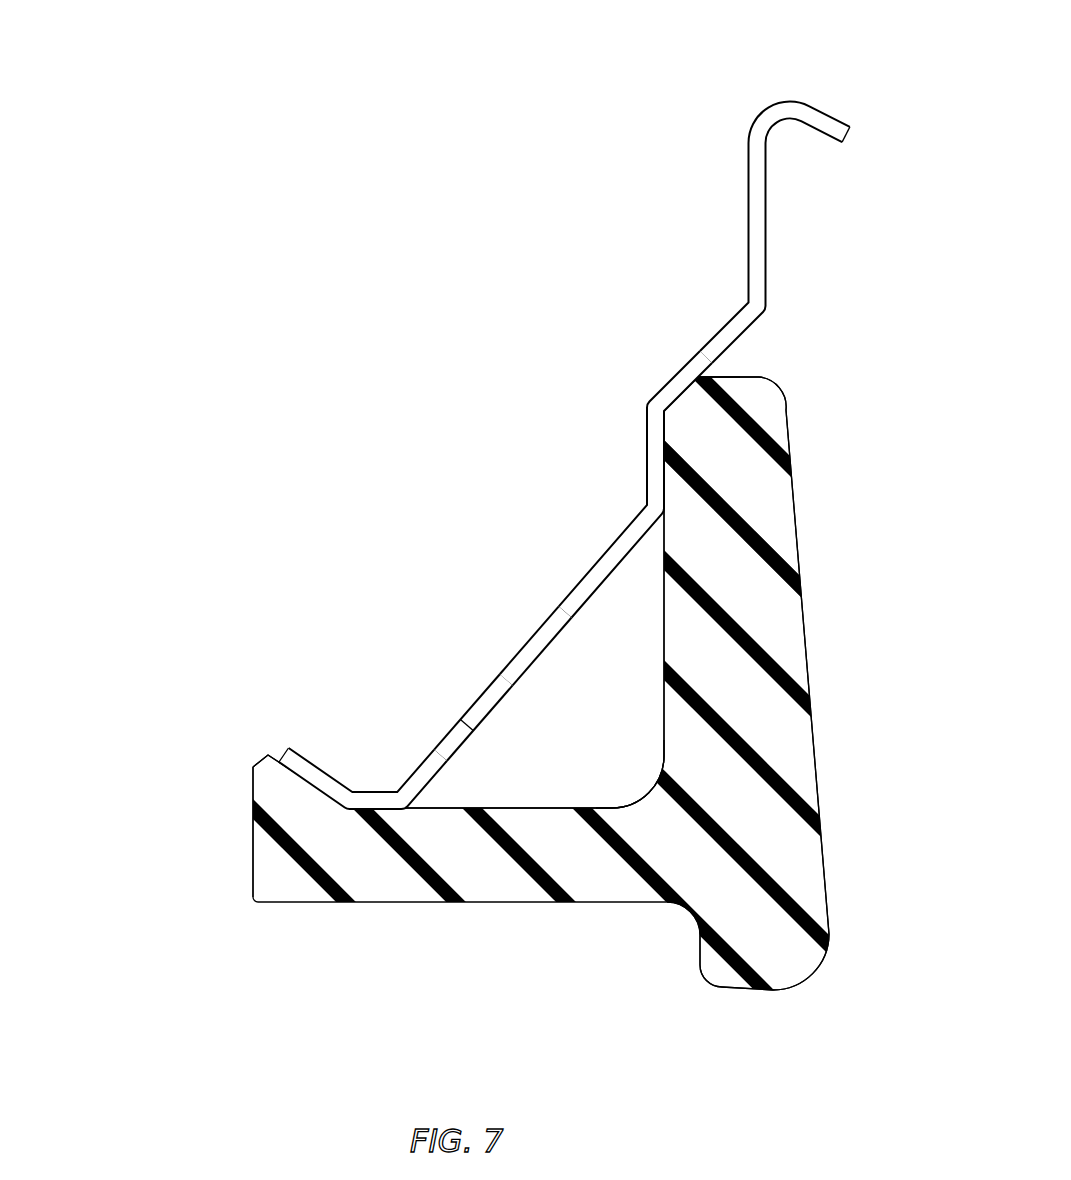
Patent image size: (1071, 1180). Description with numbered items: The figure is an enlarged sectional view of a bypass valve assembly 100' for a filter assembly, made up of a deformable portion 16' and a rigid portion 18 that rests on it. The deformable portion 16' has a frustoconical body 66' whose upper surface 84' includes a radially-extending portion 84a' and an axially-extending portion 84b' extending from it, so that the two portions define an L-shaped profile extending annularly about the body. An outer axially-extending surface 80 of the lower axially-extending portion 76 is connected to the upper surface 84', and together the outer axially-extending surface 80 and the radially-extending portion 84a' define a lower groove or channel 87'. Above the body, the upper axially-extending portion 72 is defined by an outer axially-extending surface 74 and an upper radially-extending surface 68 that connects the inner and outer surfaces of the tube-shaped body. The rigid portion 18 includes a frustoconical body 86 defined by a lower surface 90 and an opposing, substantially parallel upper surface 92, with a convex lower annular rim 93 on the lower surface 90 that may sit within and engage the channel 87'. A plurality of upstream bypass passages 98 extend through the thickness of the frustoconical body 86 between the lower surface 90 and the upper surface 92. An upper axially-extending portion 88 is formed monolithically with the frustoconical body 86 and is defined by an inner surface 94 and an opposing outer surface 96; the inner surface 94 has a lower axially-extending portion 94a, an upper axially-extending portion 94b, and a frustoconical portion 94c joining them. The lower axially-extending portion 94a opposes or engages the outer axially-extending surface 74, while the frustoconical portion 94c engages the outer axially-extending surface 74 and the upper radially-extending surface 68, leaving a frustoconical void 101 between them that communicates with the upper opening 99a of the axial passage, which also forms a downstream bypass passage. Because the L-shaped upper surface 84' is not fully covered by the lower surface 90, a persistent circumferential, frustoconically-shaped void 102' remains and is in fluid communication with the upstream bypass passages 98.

The deformable portion 16' is at (171, 706).
The rigid portion 18 is at (632, 198).
The frustoconical body 66' is at (575, 590).
The upper radially-extending surface 68 is at (733, 372).
The upper axially-extending portion 72 is at (751, 403).
The outer axially-extending surface 74 is at (667, 443).
The lower axially-extending portion 76 is at (750, 945).
The outer axially-extending surface 80 is at (251, 832).
The upper surface 84' is at (532, 719).
The radially-extending portion 84a' is at (480, 790).
The axially-extending portion 84b' is at (628, 583).
The frustoconical body 86 is at (413, 758).
The lower groove or channel 87' is at (385, 777).
The upper axially-extending portion 88 is at (643, 445).
The lower surface 90 is at (436, 737).
The upper surface 92 is at (617, 538).
The lower annular rim 93 is at (349, 812).
The inner surface 94 is at (647, 432).
The lower axially-extending portion 94a is at (713, 495).
The upper axially-extending portion 94b is at (768, 203).
The frustoconical portion 94c is at (754, 325).
The outer surface 96 is at (647, 468).
The upstream bypass passages 98 is at (532, 633).
The upper opening 99a is at (875, 150).
The bypass valve assembly 100' is at (72, 482).
The frustoconical void 101 is at (754, 355).
The persistent circumferential void 102' is at (568, 676).